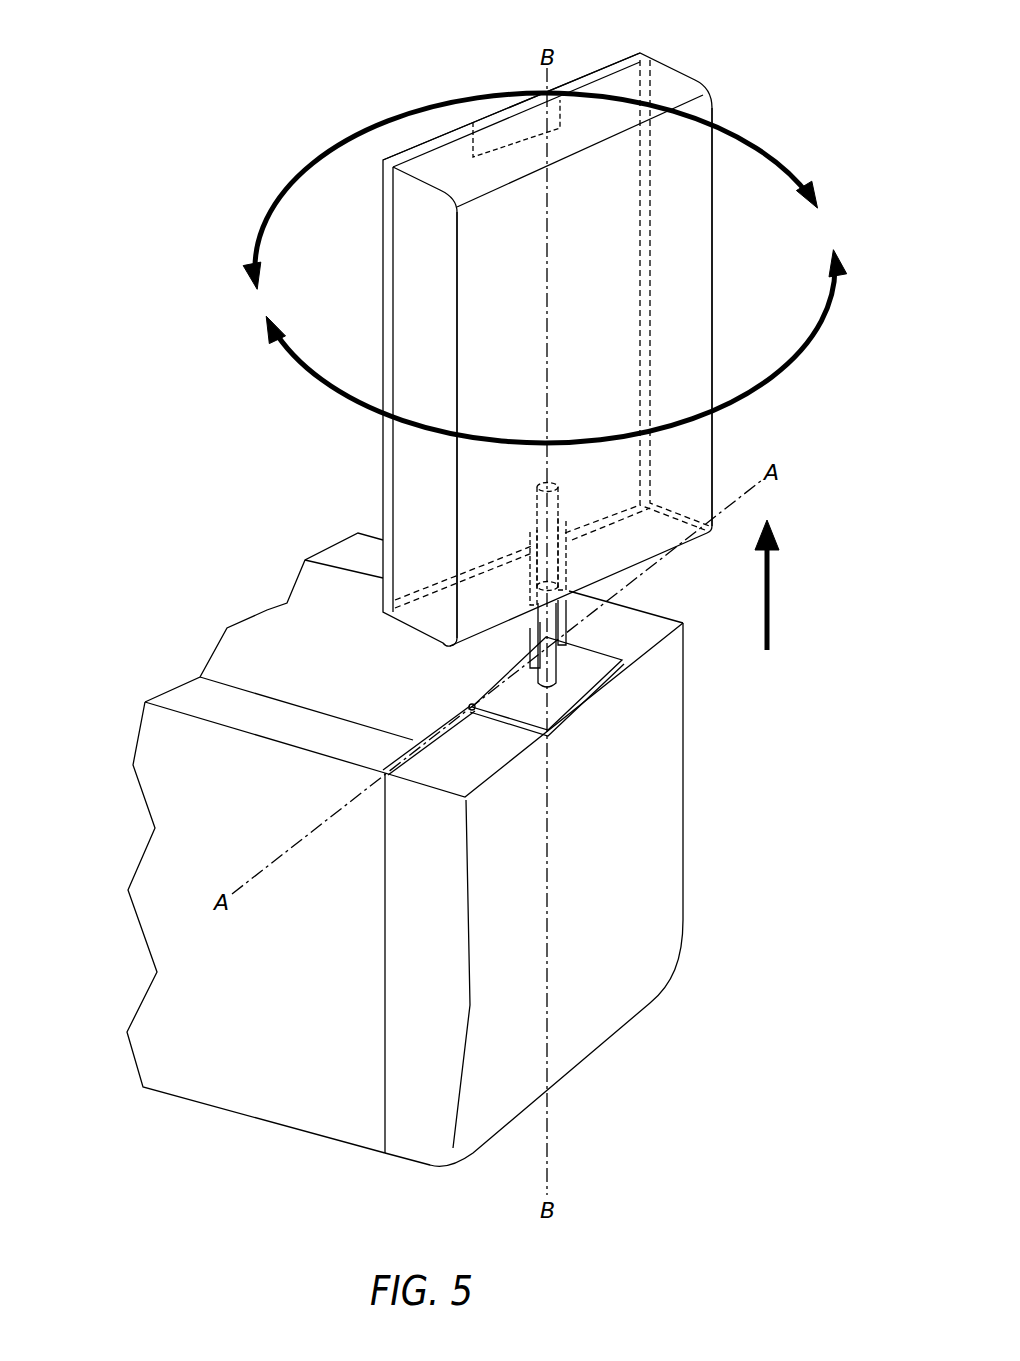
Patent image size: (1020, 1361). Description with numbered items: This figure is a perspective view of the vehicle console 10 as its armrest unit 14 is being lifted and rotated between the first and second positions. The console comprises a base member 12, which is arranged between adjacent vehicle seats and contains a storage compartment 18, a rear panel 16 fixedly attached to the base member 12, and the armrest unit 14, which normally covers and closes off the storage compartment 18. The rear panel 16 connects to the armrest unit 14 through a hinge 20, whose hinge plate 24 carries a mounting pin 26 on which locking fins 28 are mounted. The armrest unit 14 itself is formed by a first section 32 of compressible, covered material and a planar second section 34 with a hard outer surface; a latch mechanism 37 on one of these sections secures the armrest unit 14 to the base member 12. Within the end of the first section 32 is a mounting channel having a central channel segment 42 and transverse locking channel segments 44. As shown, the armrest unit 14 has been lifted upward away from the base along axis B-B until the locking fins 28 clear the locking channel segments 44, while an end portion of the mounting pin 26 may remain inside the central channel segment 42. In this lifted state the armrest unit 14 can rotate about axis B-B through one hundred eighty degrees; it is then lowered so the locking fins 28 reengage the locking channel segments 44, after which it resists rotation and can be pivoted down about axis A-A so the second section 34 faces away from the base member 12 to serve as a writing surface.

The vehicle console 10 is at (112, 256).
The base member 12 is at (243, 1078).
The armrest unit 14 is at (722, 60).
The rear panel 16 is at (626, 935).
The storage compartment 18 is at (250, 665).
The hinge 20 is at (602, 717).
The hinge plate 24 is at (596, 662).
The mounting pin 26 is at (600, 708).
The locking fins 28 is at (530, 643).
The first section 32 is at (690, 257).
The second section 34 is at (610, 62).
The latch mechanism 37 is at (517, 133).
The central channel segment 42 is at (534, 512).
The locking channel segments 44 is at (568, 528).